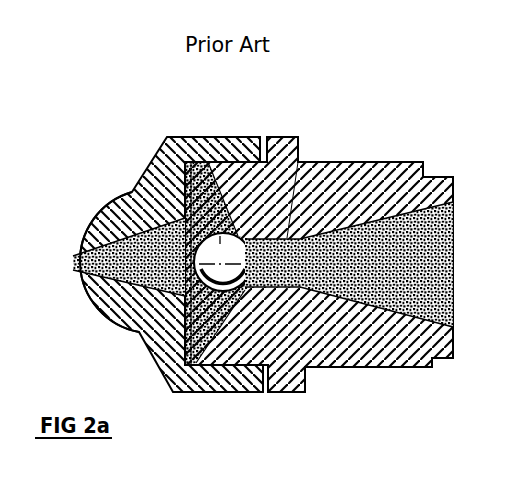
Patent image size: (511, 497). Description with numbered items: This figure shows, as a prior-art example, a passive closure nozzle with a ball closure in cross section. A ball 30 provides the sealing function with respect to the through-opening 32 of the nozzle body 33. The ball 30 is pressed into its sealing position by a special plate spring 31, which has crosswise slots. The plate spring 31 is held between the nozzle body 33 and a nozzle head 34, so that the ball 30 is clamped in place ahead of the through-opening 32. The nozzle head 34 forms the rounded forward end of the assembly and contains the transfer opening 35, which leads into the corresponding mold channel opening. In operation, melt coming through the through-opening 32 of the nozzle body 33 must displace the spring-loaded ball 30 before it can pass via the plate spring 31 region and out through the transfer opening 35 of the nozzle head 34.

The ball 30 is at (208, 136).
The plate spring 31 is at (146, 171).
The through-opening 32 is at (323, 162).
The nozzle body 33 is at (340, 158).
The nozzle head 34 is at (127, 305).
The transfer opening 35 is at (73, 263).